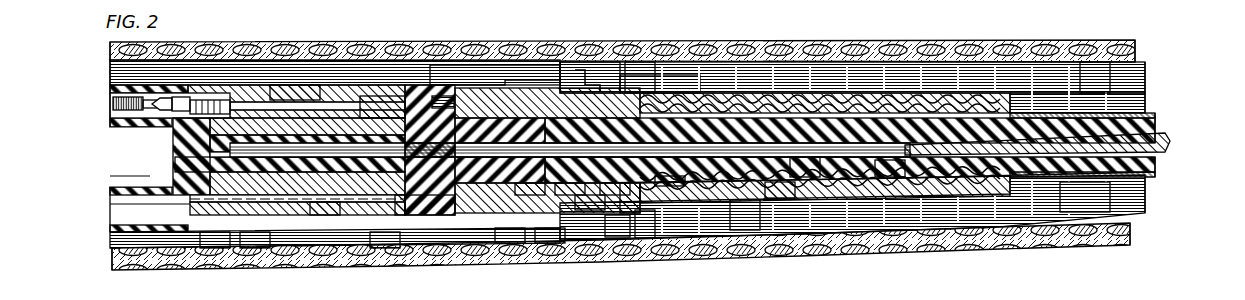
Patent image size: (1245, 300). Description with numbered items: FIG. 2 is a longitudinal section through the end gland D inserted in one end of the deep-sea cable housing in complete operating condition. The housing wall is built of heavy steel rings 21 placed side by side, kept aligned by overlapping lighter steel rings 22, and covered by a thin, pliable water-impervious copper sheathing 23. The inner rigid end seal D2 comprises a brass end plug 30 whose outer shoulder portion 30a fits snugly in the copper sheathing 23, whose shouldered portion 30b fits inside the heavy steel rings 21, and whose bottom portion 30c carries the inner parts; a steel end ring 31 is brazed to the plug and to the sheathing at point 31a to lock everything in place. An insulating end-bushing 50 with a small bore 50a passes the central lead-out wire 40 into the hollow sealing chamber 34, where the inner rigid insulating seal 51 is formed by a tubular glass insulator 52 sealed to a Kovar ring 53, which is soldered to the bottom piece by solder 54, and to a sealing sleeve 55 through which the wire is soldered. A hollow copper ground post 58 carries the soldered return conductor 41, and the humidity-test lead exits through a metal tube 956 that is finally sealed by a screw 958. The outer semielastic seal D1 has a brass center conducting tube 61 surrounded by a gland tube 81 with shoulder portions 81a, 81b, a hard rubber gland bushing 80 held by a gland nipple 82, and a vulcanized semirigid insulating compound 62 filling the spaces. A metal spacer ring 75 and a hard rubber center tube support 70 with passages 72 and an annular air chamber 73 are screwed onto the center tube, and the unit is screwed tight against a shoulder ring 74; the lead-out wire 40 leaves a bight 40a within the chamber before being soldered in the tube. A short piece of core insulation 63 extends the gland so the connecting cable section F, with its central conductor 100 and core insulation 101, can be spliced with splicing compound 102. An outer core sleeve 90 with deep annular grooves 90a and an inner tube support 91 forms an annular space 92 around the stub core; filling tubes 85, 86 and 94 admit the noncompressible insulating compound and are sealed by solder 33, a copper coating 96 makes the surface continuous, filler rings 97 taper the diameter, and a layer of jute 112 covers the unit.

The heavy steel rings 21 is at (108, 78).
The outer lighter steel rings 22 is at (112, 72).
The copper sheathing 23 is at (110, 64).
The end plug 30 is at (250, 232).
The outer shoulder portion 30a is at (510, 216).
The shouldered portion 30b is at (380, 215).
The bottom portion 30c is at (210, 206).
The end ring 31 is at (545, 216).
The brazing point 31a is at (610, 200).
The solder filling 33 is at (616, 232).
The sealing chamber 34 is at (318, 206).
The lead-out wire 40 is at (124, 149).
The bight 40a is at (390, 156).
The return conductor 41 is at (120, 204).
The end-bushing 50 is at (118, 182).
The small bore 50a is at (128, 160).
The inner rigid insulating seal 51 is at (326, 117).
The glass insulator 52 is at (300, 222).
The ring 53 is at (258, 210).
The solder 54 is at (232, 206).
The sealing sleeve 55 is at (335, 156).
The ground post 58 is at (348, 214).
The center conducting tube 61 is at (805, 166).
The semirigid insulating compound 62 is at (670, 186).
The core insulation 63 is at (778, 182).
The center tube support 70 is at (411, 216).
The passages 72 is at (424, 160).
The annular air chamber 73 is at (449, 94).
The shoulder ring 74 is at (400, 206).
The metal spacer ring 75 is at (446, 202).
The gland bushing 80 is at (466, 205).
The gland tube 81 is at (631, 192).
The external shoulder portion 81a is at (586, 212).
The external shoulder portion 81b is at (528, 200).
The gland nipple 82 is at (487, 210).
The filling tube 85 is at (565, 196).
The filling tube 86 is at (588, 72).
The outer core sleeve 90 is at (1152, 186).
The annular grooves 90a is at (1000, 196).
The tube support 91 is at (745, 200).
The annular space 92 is at (1158, 175).
The filling tube 94 is at (640, 93).
The coating of copper 96 is at (646, 233).
The filler rings 97 is at (1100, 205).
The central conductor 100 is at (1166, 142).
The core insulation 101 is at (1160, 162).
The splicing compound 102 is at (890, 176).
The layer of jute 112 is at (1138, 238).
The metal tube 956 is at (252, 106).
The screw 958 is at (369, 100).
The end gland D is at (537, 72).
The outer semielastic seal D1 is at (683, 108).
The inner rigid end seal D2 is at (294, 88).
The connecting cable section F is at (1093, 133).